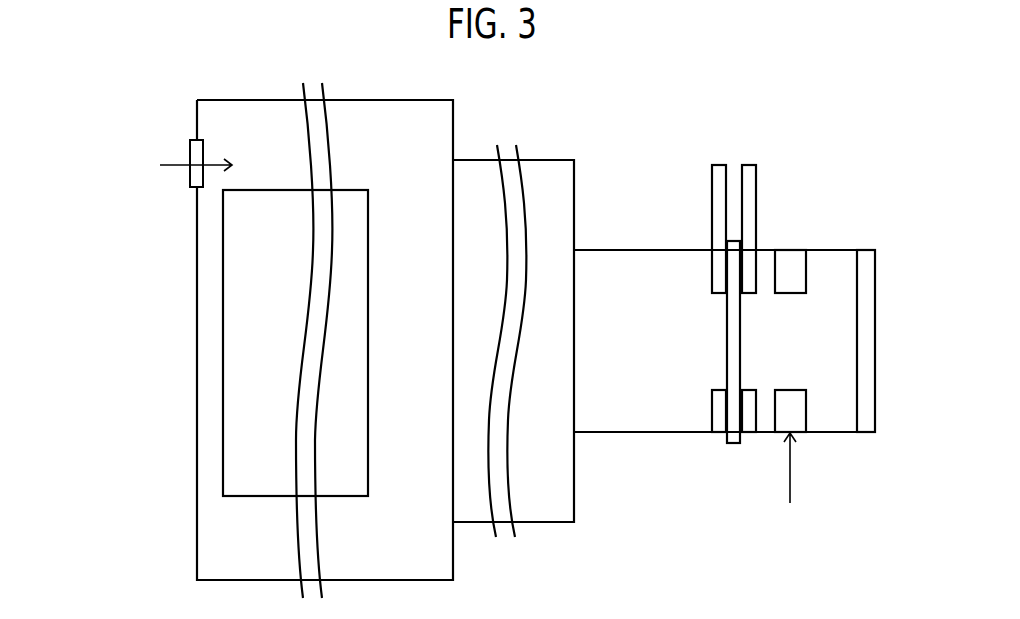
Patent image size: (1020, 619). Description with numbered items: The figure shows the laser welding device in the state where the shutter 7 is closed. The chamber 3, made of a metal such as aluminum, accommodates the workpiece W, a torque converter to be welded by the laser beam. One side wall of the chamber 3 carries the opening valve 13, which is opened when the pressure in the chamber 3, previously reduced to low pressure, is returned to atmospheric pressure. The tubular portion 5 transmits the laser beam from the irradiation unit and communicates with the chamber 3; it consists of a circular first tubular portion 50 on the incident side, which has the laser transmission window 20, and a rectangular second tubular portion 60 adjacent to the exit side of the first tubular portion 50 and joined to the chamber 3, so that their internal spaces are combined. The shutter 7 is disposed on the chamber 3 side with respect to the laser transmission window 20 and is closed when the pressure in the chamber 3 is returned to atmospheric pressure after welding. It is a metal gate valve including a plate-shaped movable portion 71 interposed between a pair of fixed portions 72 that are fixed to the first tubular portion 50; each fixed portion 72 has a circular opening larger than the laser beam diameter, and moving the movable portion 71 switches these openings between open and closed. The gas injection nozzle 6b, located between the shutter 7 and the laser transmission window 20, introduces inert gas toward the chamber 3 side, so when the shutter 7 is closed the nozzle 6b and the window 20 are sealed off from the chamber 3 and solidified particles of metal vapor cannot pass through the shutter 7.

The chamber 3 is at (417, 100).
The opening valve 13 is at (195, 138).
The workpiece W is at (353, 190).
The second tubular portion 60 is at (560, 160).
The tubular portion 5 is at (631, 181).
The first tubular portion 50 is at (623, 251).
The laser transmission window 20 is at (871, 250).
The shutter 7 is at (752, 165).
The fixed portions 72 is at (712, 202).
The movable portion 71 is at (727, 312).
The gas injection nozzle 6b is at (803, 255).